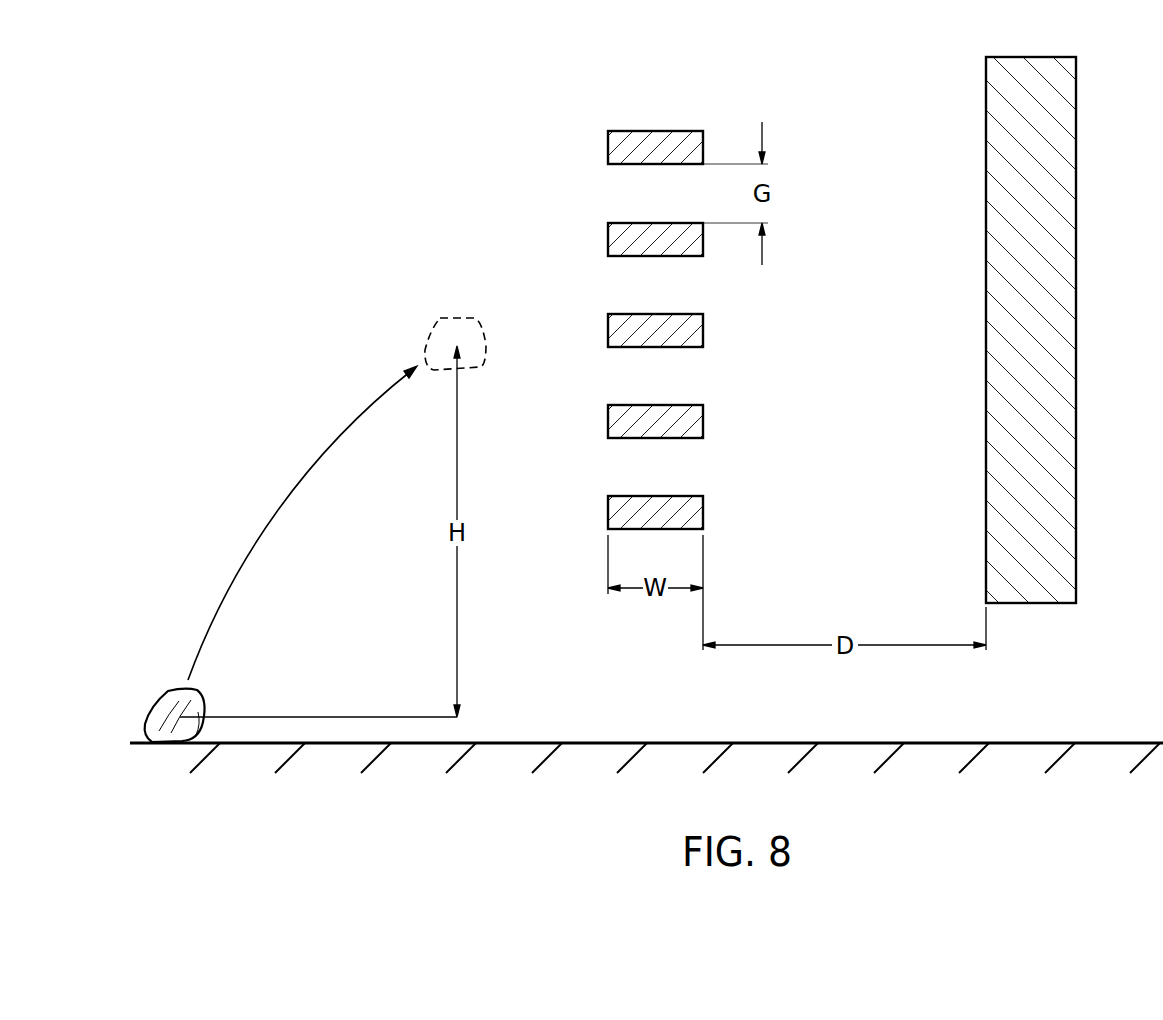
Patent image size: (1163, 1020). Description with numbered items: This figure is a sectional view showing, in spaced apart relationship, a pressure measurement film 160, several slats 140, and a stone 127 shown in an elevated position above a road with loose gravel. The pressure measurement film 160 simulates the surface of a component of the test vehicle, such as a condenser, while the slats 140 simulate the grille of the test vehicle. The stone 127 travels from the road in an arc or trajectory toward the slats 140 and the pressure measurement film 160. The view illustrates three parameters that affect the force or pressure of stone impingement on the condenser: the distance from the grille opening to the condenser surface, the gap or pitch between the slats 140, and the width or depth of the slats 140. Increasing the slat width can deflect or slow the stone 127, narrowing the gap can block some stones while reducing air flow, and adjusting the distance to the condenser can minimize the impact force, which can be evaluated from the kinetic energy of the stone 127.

The stone 127 is at (175, 688).
The slats 140 is at (650, 131).
The pressure measurement film 160 is at (1077, 243).